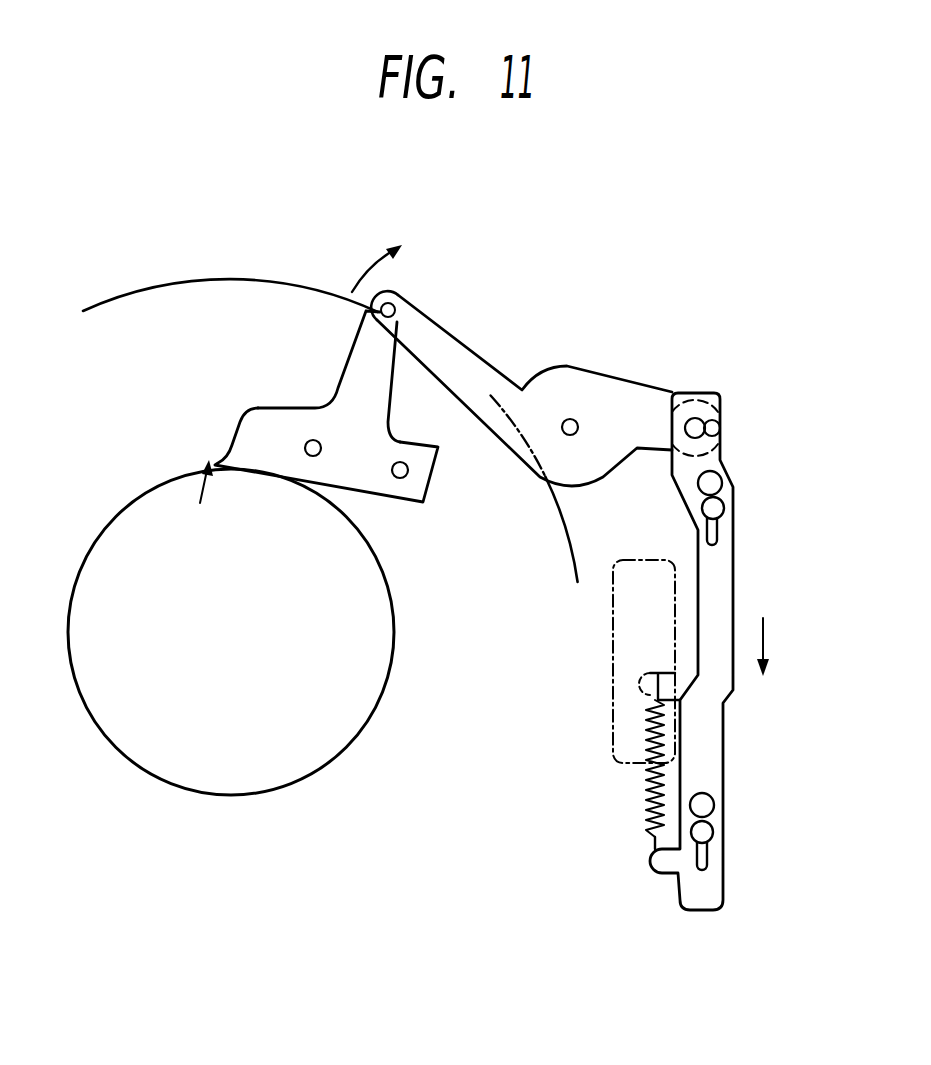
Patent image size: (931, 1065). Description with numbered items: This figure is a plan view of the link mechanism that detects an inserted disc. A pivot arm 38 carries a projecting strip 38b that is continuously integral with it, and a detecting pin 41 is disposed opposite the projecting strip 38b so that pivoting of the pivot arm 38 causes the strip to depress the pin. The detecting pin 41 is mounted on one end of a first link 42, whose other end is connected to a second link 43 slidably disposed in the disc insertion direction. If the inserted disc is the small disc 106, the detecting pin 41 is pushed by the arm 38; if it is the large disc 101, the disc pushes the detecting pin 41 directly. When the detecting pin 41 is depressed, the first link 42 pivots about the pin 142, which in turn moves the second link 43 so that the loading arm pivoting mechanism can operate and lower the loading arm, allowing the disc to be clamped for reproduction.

The large disc 101 is at (265, 277).
The small disc 106 is at (363, 734).
The pivot arm 38 is at (398, 441).
The projecting strip 38b is at (365, 358).
The detecting pin 41 is at (399, 293).
The first link 42 is at (524, 414).
The pin 142 is at (572, 435).
The second link 43 is at (723, 607).